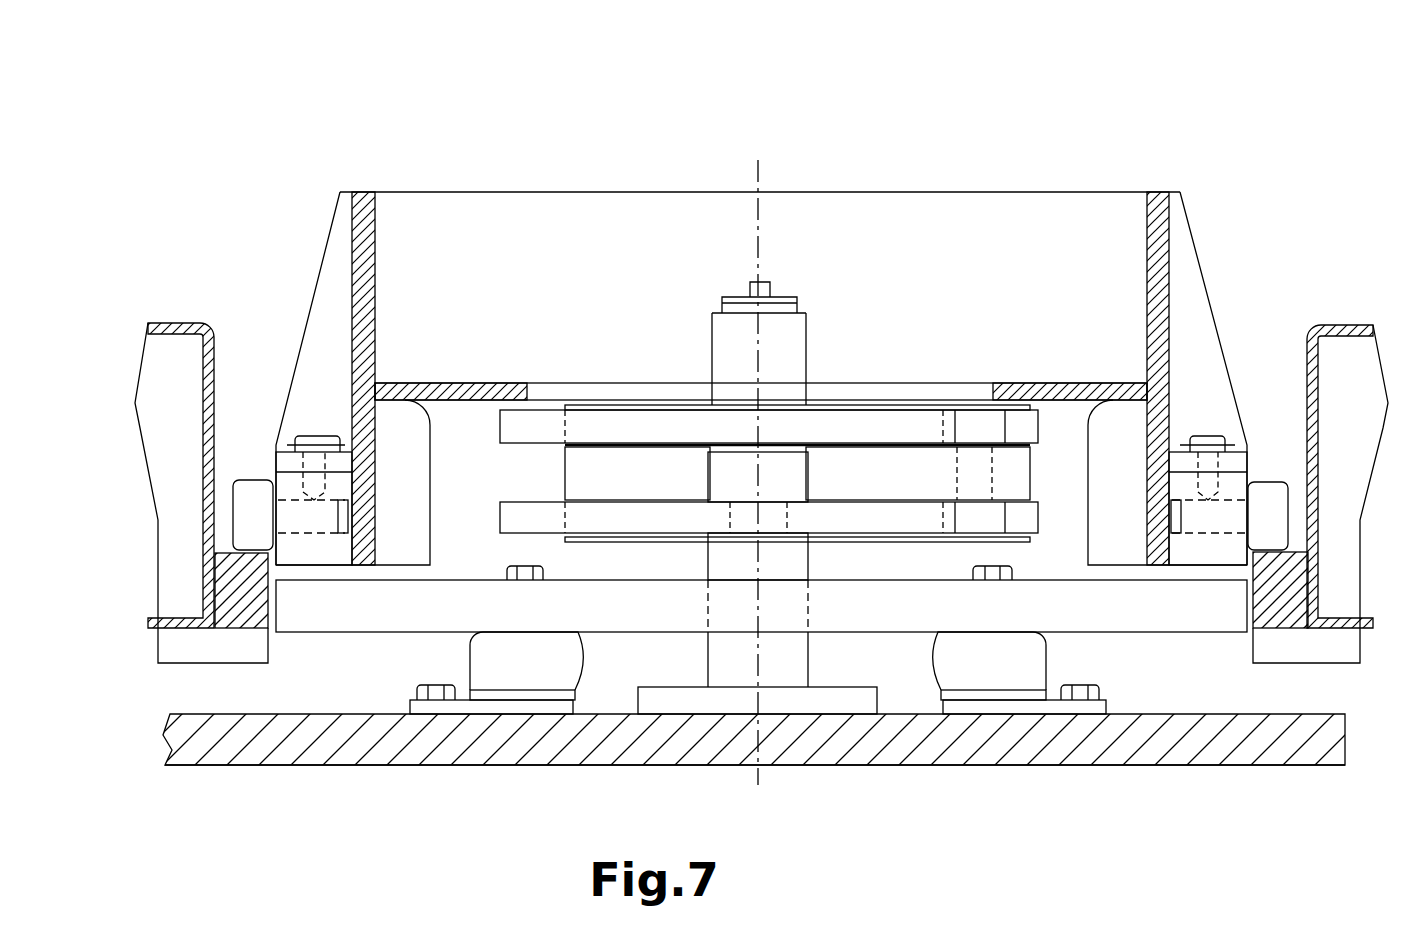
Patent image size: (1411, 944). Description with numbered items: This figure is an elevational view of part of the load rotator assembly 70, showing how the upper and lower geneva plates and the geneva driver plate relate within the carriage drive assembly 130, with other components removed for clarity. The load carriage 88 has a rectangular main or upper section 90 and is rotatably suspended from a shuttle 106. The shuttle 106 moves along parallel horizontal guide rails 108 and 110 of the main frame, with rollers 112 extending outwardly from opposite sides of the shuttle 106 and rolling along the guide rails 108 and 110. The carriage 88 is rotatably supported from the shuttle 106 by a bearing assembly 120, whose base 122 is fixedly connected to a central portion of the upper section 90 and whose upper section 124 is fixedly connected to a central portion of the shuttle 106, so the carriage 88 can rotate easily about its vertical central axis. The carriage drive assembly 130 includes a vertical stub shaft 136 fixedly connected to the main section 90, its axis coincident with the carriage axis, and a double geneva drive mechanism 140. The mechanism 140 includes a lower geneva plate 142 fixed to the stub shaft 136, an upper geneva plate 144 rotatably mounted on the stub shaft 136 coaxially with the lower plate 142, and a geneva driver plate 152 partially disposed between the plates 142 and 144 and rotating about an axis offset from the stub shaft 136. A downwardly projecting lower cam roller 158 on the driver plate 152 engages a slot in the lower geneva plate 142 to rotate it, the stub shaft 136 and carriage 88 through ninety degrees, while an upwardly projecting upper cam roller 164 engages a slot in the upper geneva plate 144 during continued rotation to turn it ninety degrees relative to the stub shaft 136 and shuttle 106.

The vibratory drive assembly 70 is at (1240, 140).
The load carriage 88 is at (297, 767).
The main or upper section 90 is at (1140, 740).
The shuttle 106 is at (308, 633).
The horizontal guide rail 108 is at (230, 588).
The horizontal guide rail 110 is at (1278, 595).
The rollers 112 is at (250, 510).
The bearing assembly 120 is at (470, 665).
The base 122 is at (498, 705).
The upper section 124 is at (547, 663).
The carriage drive assembly 130 is at (508, 345).
The vertical stub shaft 136 is at (778, 658).
The double geneva drive mechanism 140 is at (1020, 398).
The lower geneva plate 142 is at (497, 512).
The upper geneva plate 144 is at (547, 406).
The geneva driver plate 152 is at (595, 475).
The lower cam roller 158 is at (985, 540).
The upper cam roller 164 is at (975, 407).